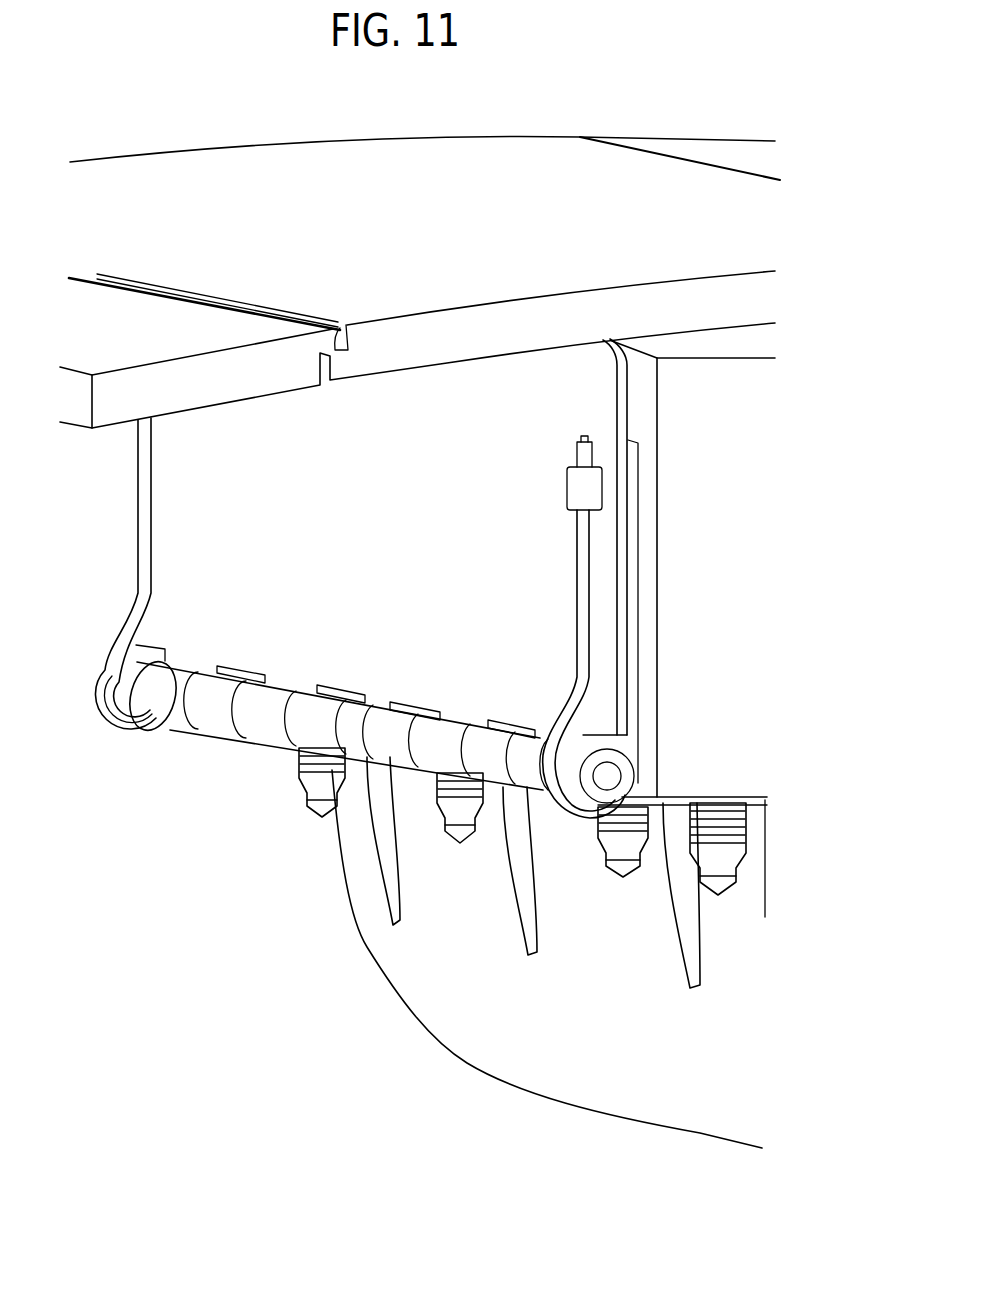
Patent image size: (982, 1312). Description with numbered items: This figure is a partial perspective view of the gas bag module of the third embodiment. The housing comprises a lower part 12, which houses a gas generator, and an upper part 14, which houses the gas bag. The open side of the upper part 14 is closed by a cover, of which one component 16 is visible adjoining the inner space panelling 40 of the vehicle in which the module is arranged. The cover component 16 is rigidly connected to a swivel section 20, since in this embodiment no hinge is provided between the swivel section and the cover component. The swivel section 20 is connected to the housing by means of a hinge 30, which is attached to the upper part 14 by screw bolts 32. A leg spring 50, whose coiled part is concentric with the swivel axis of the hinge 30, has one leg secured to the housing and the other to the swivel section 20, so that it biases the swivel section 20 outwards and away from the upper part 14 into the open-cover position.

The lower part 12 is at (510, 1050).
The upper part 14 is at (757, 690).
The cover component 16 is at (456, 167).
The swivel section 20 is at (160, 538).
The hinge 30 is at (264, 718).
The screw bolt 32 is at (613, 860).
The inner space panelling 40 is at (198, 337).
The leg spring 50 is at (577, 586).